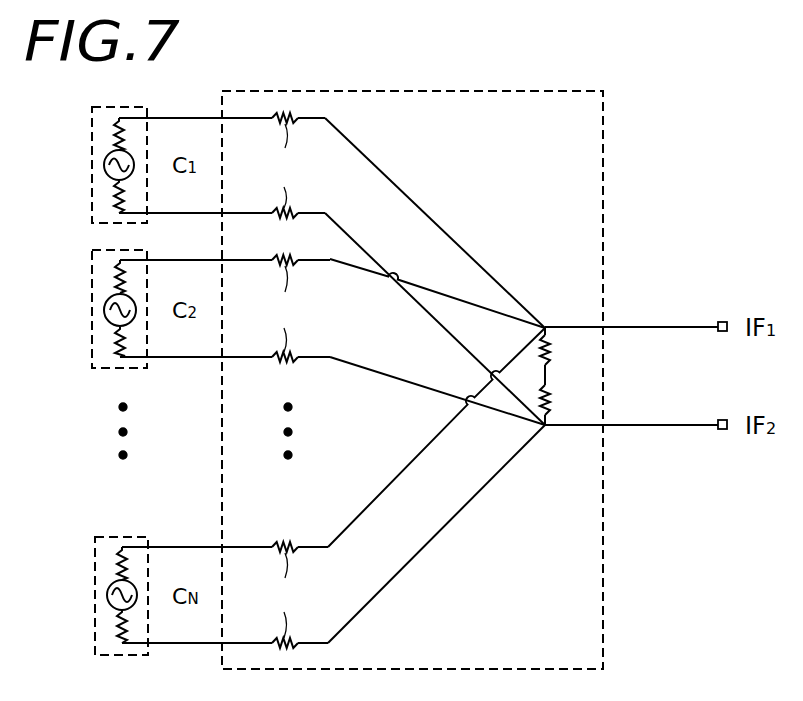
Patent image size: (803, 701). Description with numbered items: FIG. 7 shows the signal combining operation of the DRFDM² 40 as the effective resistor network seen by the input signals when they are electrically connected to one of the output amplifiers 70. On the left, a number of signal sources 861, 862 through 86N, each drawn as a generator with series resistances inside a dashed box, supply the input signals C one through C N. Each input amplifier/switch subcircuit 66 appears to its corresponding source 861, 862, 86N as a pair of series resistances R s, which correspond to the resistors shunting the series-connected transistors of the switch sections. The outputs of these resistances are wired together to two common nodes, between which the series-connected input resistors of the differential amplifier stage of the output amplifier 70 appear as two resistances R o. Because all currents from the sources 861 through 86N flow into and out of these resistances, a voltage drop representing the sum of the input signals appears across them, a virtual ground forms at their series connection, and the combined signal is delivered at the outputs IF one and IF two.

The DRFDM² 40 is at (410, 90).
The input amplifier/switch subcircuit 66 is at (325, 81).
The output amplifier 70 is at (602, 81).
The source 861 is at (92, 166).
The source 862 is at (92, 310).
The source 86N is at (95, 592).